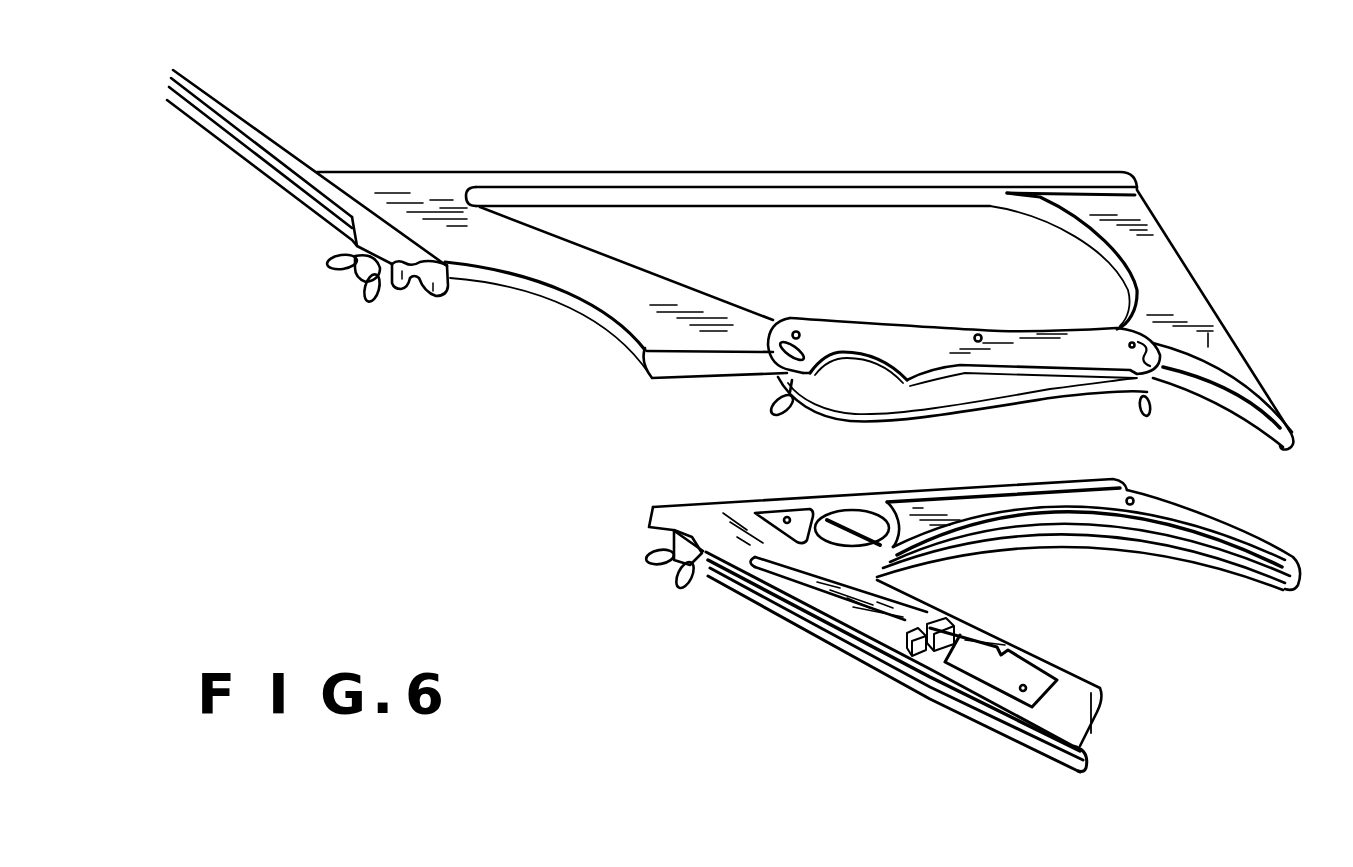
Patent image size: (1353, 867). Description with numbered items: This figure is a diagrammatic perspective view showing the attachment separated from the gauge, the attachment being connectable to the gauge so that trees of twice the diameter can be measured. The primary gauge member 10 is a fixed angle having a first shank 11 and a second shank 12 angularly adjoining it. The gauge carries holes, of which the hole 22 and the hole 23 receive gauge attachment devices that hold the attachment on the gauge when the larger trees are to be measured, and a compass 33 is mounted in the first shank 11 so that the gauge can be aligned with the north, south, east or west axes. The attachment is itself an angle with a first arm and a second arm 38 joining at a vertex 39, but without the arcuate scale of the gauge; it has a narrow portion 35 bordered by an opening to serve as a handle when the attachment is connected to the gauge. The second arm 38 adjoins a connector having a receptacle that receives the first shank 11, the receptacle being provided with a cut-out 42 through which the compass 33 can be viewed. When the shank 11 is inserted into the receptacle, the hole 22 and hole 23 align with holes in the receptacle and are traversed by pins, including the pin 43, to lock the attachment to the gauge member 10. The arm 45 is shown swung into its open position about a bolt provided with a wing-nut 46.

The primary gauge member 10 is at (830, 583).
The first shank 11 is at (938, 512).
The second shank 12 is at (985, 660).
The hole 22 is at (783, 518).
The hole 23 is at (1133, 498).
The compass 33 is at (855, 523).
The narrow portion 35 is at (625, 296).
The second arm 38 is at (470, 262).
The vertex 39 is at (367, 187).
The cut-out 42 is at (875, 345).
The pin 43 is at (798, 333).
The arm 45 is at (240, 127).
The wing-nut 46 is at (327, 260).